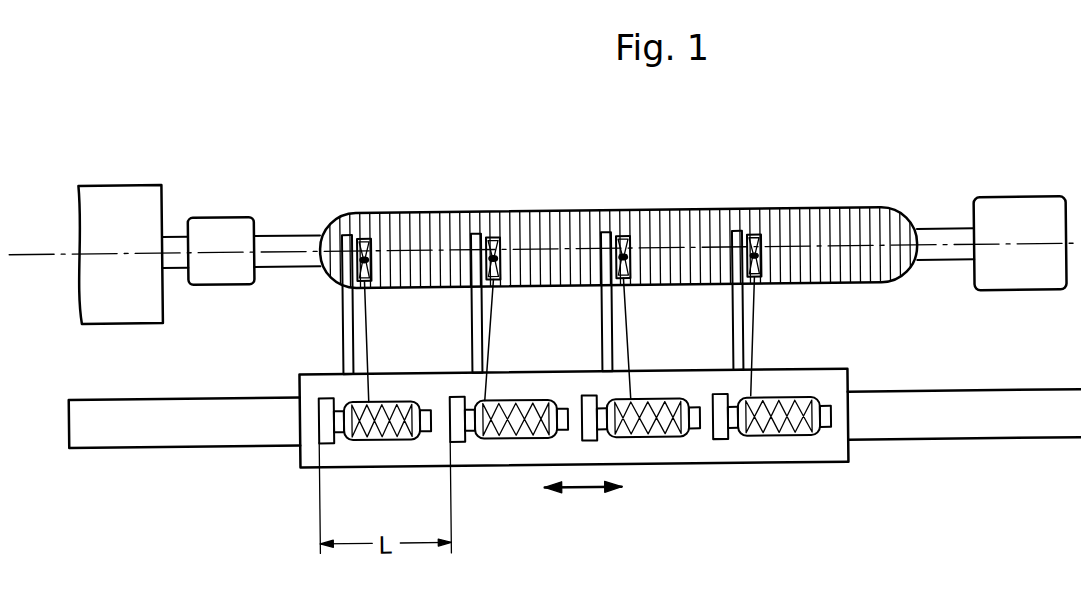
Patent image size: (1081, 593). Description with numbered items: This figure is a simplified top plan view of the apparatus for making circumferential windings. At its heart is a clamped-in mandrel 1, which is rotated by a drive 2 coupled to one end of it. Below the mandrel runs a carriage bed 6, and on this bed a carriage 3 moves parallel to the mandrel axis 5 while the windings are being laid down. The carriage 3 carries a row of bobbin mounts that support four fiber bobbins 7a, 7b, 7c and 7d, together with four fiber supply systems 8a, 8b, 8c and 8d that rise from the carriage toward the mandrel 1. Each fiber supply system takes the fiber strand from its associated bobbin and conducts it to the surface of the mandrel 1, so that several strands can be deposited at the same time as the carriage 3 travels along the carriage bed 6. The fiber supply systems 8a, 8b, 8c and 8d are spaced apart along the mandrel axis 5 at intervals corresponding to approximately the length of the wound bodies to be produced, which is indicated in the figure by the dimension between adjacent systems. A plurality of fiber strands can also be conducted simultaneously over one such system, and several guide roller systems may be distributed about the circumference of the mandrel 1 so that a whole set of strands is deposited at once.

The mandrel 1 is at (757, 215).
The drive 2 is at (150, 304).
The carriage 3 is at (436, 451).
The mandrel axis 5 is at (844, 246).
The carriage bed 6 is at (924, 428).
The fiber bobbin 7a is at (386, 430).
The fiber bobbin 7b is at (513, 437).
The fiber bobbin 7c is at (660, 431).
The fiber bobbin 7d is at (780, 423).
The fiber supply system 8a is at (343, 323).
The fiber supply system 8b is at (472, 317).
The fiber supply system 8c is at (602, 324).
The fiber supply system 8d is at (733, 321).